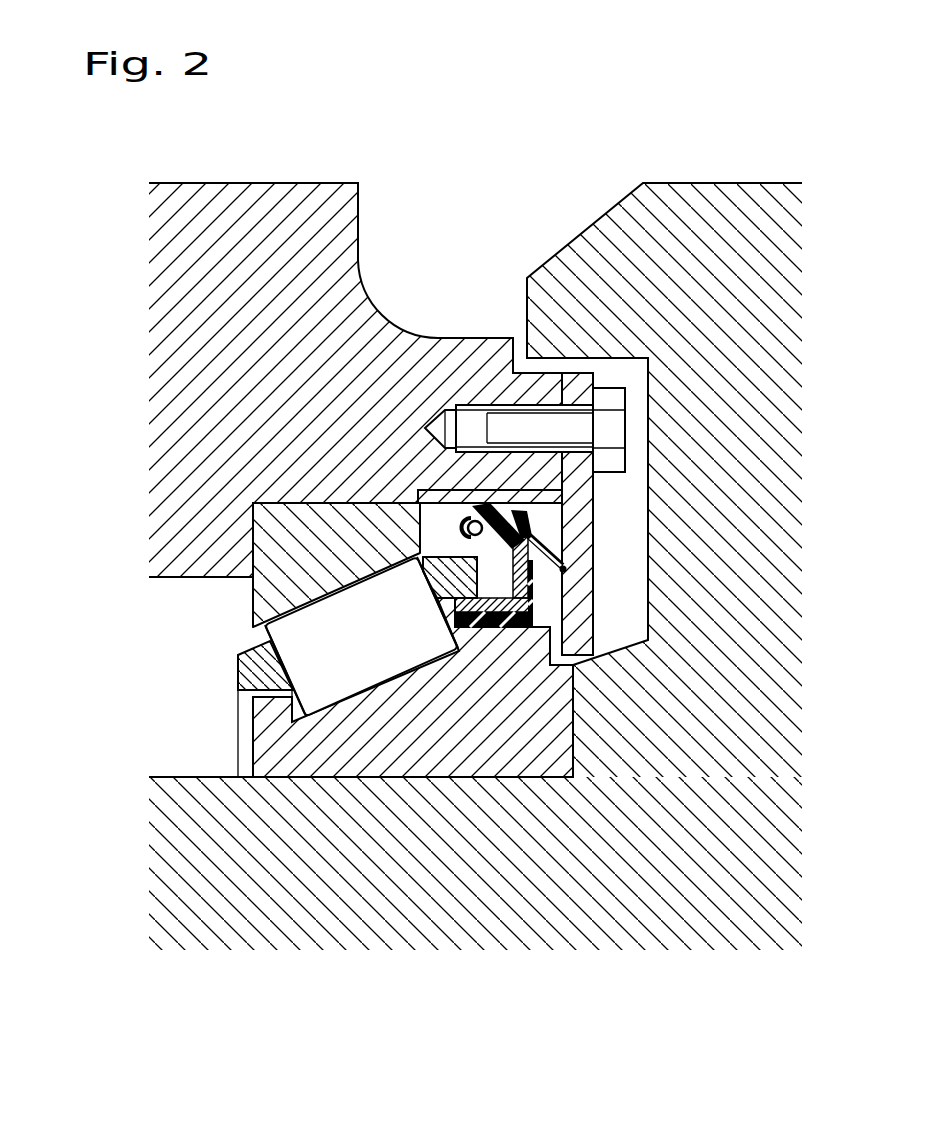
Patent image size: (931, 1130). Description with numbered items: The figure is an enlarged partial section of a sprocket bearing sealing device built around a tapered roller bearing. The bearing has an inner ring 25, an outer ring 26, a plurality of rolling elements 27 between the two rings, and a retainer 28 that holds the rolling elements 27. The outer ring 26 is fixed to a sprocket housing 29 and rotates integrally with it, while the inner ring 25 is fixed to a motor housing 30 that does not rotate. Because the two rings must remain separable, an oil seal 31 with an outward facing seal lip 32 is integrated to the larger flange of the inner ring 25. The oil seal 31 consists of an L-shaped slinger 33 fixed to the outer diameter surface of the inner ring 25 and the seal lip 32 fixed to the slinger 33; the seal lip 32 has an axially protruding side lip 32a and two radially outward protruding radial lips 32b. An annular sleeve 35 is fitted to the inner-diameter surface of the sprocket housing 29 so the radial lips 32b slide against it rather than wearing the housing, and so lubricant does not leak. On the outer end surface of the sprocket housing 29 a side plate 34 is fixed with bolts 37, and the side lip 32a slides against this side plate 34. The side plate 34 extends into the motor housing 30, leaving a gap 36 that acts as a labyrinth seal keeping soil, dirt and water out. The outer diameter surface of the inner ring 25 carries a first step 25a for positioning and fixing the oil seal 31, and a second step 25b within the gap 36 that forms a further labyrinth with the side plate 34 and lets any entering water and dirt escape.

The inner ring 25 is at (355, 710).
The first step 25a is at (470, 633).
The second step 25b is at (575, 670).
The outer ring 26 is at (345, 543).
The rolling elements 27 is at (325, 664).
The retainer 28 is at (273, 675).
The sprocket housing 29 is at (275, 292).
The motor housing 30 is at (555, 655).
The oil seal 31 is at (450, 517).
The seal lip 32 is at (530, 145).
The side lip 32a is at (548, 550).
The radial lips 32b is at (510, 513).
The slinger 33 is at (500, 607).
The side plate 34 is at (643, 640).
The annular sleeve 35 is at (457, 497).
The gap 36 is at (583, 607).
The bolts 37 is at (608, 432).